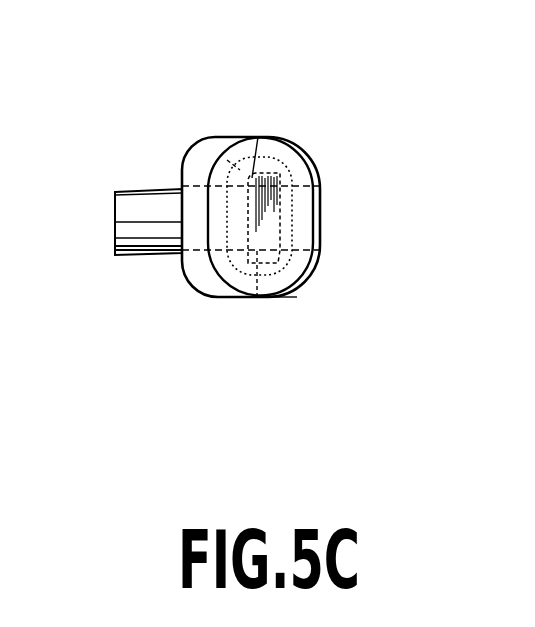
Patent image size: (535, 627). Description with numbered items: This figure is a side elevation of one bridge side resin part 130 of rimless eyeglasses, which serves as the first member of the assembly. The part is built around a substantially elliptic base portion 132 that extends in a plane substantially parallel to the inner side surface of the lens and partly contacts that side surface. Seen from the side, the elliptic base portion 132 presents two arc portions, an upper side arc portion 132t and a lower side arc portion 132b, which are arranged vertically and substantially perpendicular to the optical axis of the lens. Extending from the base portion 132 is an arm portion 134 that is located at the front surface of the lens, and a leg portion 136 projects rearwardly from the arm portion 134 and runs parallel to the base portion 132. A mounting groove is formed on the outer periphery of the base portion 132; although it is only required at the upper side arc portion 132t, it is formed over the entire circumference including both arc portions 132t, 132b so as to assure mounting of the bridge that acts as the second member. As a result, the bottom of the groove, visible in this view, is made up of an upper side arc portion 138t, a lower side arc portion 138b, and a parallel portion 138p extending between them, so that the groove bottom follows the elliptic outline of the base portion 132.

The bridge side resin part 130 is at (218, 243).
The base portion 132 is at (213, 267).
The upper side arc portion 132t is at (258, 137).
The lower side arc portion 132b is at (297, 297).
The arm portion 134 is at (297, 173).
The leg portion 136 is at (115, 237).
The upper side arc portion of groove bottom 138t is at (227, 160).
The lower side arc portion of groove bottom 138b is at (257, 297).
The parallel portion 138p is at (227, 217).